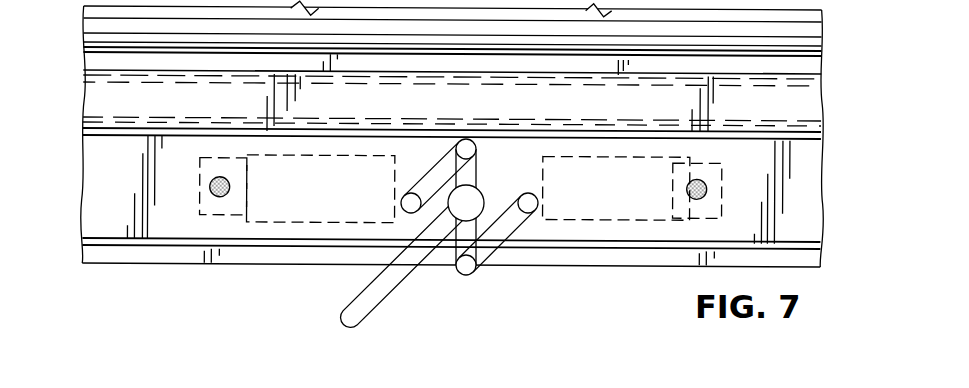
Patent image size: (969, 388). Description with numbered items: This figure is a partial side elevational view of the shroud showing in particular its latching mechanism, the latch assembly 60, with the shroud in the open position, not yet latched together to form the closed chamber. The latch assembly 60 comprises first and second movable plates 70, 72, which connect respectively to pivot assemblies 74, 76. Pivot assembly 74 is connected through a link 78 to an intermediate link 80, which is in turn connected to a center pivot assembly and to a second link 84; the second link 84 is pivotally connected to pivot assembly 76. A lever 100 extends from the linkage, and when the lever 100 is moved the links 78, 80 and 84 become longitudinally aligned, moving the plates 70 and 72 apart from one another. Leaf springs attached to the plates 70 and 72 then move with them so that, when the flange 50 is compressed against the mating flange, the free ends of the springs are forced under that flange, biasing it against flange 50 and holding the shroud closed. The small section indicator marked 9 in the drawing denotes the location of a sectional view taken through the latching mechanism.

The flange 50 is at (807, 257).
The latch assembly 60 is at (446, 285).
The first movable plate 70 is at (795, 178).
The second movable plate 72 is at (108, 161).
The pivot assembly 74 is at (530, 208).
The pivot assembly 76 is at (404, 208).
The link 78 is at (487, 248).
The intermediate link 80 is at (478, 178).
The second link 84 is at (430, 180).
The lever 100 is at (357, 317).
The section line for FIG. 9 is at (248, 372).